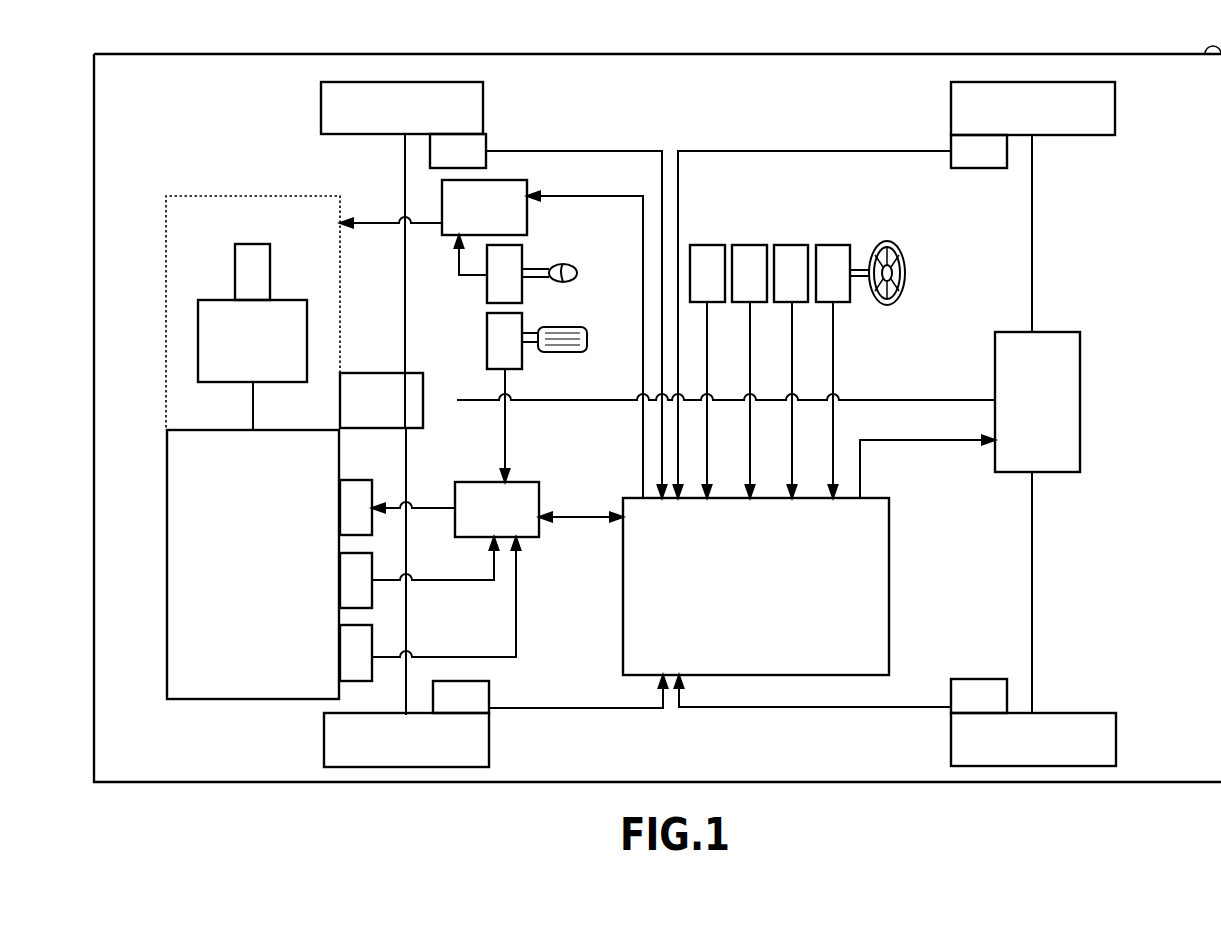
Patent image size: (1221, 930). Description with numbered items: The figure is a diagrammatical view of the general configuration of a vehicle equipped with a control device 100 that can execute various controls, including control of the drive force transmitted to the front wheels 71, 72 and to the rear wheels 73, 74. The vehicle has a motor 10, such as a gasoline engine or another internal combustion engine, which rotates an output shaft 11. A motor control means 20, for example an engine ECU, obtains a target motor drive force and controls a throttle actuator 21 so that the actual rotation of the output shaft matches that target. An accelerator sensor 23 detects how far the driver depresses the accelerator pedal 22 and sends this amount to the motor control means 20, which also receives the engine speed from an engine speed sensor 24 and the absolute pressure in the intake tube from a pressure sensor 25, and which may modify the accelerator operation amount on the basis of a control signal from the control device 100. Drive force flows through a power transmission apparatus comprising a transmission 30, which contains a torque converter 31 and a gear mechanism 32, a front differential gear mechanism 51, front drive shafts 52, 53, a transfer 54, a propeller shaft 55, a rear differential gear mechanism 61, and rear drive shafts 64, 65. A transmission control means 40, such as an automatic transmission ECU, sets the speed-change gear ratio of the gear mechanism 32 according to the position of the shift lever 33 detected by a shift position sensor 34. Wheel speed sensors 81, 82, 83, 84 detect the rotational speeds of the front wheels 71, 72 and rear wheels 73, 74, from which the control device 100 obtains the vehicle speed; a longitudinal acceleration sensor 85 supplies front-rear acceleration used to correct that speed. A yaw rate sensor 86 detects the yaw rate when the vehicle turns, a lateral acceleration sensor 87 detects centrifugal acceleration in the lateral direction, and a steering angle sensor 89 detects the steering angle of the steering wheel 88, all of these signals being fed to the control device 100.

The motor 10 is at (257, 700).
The output shaft 11 is at (256, 409).
The motor control means 20 is at (525, 482).
The throttle actuator 21 is at (366, 478).
The accelerator pedal 22 is at (588, 340).
The accelerator sensor 23 is at (523, 316).
The engine speed sensor 24 is at (366, 551).
The pressure sensor 25 is at (366, 623).
The transmission 30 is at (297, 193).
The torque converter 31 is at (288, 300).
The gear mechanism 32 is at (232, 275).
The shift lever 33 is at (578, 273).
The shift position sensor 34 is at (523, 248).
The transmission control means 40 is at (528, 180).
The front differential gear mechanism 51 is at (378, 373).
The front drive shaft 52 is at (407, 350).
The front drive shaft 53 is at (408, 470).
The transfer 54 is at (458, 378).
The propeller shaft 55 is at (556, 400).
The rear differential gear mechanism 61 is at (1072, 331).
The rear drive shaft 64 is at (1034, 281).
The rear drive shaft 65 is at (1034, 526).
The front wheel 71 is at (486, 96).
The front wheel 72 is at (490, 740).
The rear wheel 73 is at (1060, 137).
The rear wheel 74 is at (1071, 712).
The wheel speed sensor 81 is at (487, 140).
The wheel speed sensor 82 is at (490, 688).
The wheel speed sensor 83 is at (977, 170).
The wheel speed sensor 84 is at (980, 678).
The longitudinal acceleration sensor 85 is at (704, 245).
The yaw rate sensor 86 is at (746, 245).
The lateral acceleration sensor 87 is at (788, 245).
The steering wheel 88 is at (906, 273).
The steering angle sensor 89 is at (830, 245).
The control device 100 is at (890, 578).